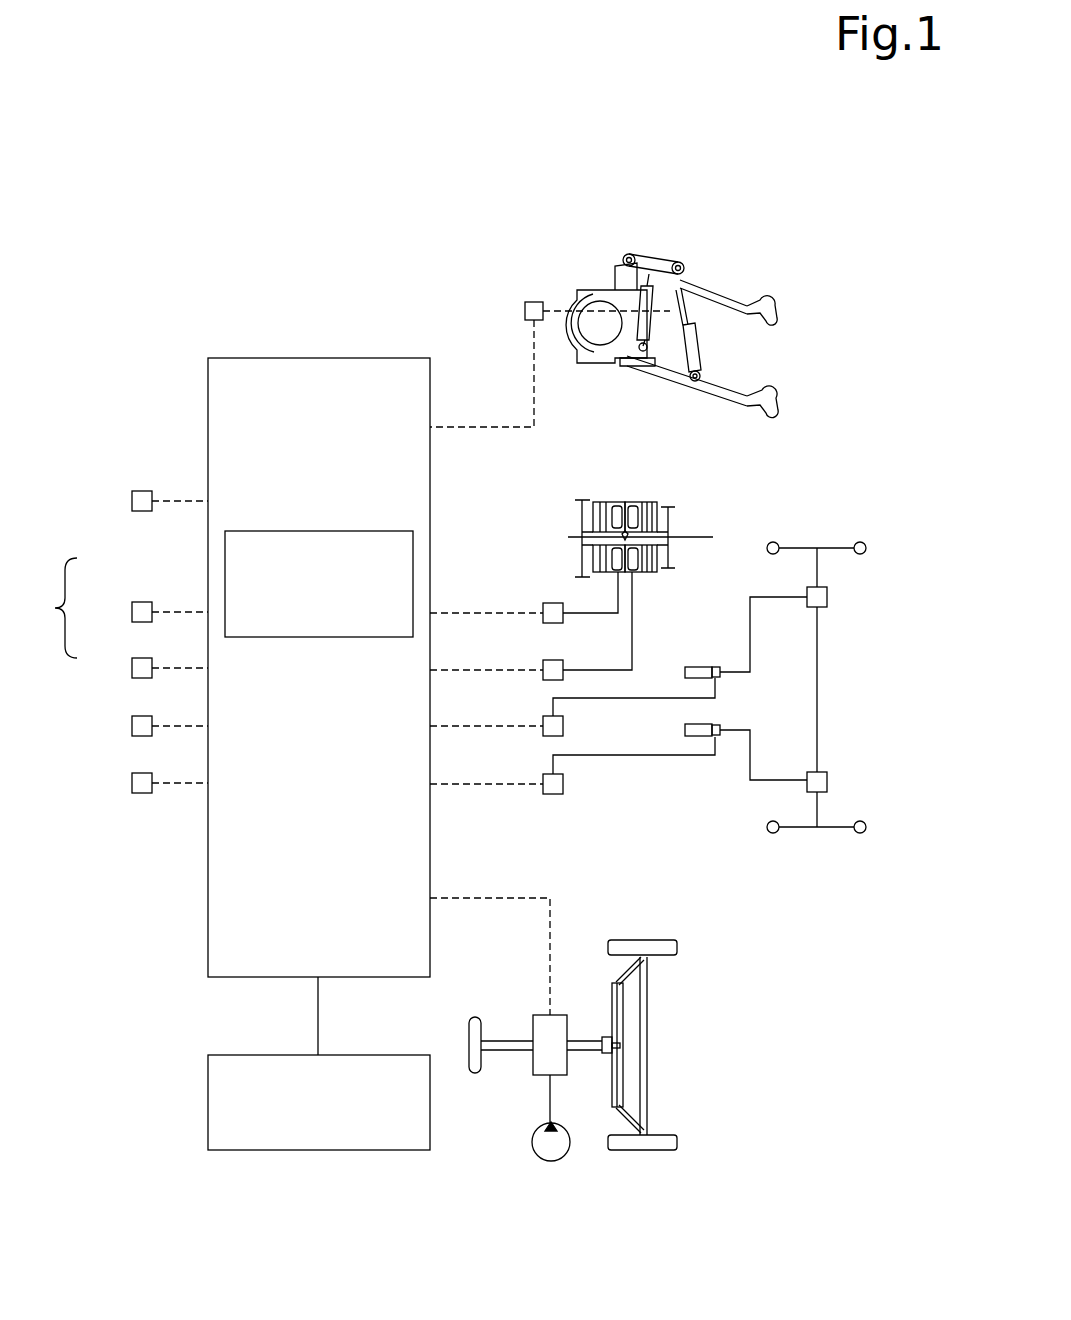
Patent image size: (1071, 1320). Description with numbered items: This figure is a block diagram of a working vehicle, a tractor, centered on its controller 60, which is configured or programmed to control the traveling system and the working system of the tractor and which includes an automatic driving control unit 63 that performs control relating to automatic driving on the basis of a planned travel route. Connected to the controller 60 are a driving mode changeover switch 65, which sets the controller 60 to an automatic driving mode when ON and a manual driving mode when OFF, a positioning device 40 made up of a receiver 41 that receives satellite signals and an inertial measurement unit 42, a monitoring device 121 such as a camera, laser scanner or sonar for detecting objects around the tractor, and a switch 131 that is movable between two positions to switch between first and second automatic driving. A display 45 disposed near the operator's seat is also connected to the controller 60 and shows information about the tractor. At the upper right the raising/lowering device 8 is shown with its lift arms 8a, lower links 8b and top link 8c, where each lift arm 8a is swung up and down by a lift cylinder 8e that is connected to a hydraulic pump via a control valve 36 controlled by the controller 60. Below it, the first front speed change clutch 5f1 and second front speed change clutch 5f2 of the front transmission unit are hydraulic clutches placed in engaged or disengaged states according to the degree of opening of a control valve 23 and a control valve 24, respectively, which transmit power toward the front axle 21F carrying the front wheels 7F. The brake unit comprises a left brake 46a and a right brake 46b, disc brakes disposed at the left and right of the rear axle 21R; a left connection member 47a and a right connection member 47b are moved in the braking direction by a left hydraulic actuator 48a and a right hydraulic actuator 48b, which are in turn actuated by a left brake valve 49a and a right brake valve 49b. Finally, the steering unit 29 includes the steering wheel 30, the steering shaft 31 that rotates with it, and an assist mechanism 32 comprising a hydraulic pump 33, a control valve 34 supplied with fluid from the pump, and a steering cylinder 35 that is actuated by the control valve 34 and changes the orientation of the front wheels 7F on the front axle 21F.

The controller 60 is at (208, 390).
The automatic driving control unit 63 is at (370, 531).
The driving mode changeover switch 65 is at (132, 500).
The positioning device 40 is at (48, 608).
The receiver 41 is at (132, 610).
The inertial measurement unit 42 is at (132, 667).
The monitoring device 121 is at (132, 725).
The switch 131 is at (132, 782).
The display 45 is at (208, 1100).
The control valve 36 is at (525, 306).
The raising/lowering device 8 is at (701, 249).
The lift arm 8a is at (651, 254).
The lower link 8b is at (738, 388).
The top link 8c is at (716, 294).
The lift cylinder 8e is at (640, 305).
The first front speed change clutch 5f1 is at (598, 490).
The second front speed change clutch 5f2 is at (648, 490).
The control valve 23 is at (543, 608).
The control valve 24 is at (543, 665).
The left brake valve 49a is at (543, 778).
The right brake valve 49b is at (543, 720).
The left connection member 47a is at (750, 776).
The right connection member 47b is at (750, 612).
The left hydraulic actuator 48a is at (685, 728).
The right hydraulic actuator 48b is at (713, 667).
The left brake 46a is at (827, 782).
The right brake 46b is at (827, 598).
The rear axle 21R is at (818, 665).
The steering unit 29 is at (656, 915).
The steering wheel 30 is at (469, 1035).
The steering shaft 31 is at (497, 1041).
The assist mechanism 32 is at (528, 1092).
The hydraulic pump 33 is at (565, 1158).
The control valve 34 is at (533, 1030).
The steering cylinder 35 is at (623, 1035).
The front axle 21F is at (648, 1080).
The front wheel 7F is at (677, 1142).